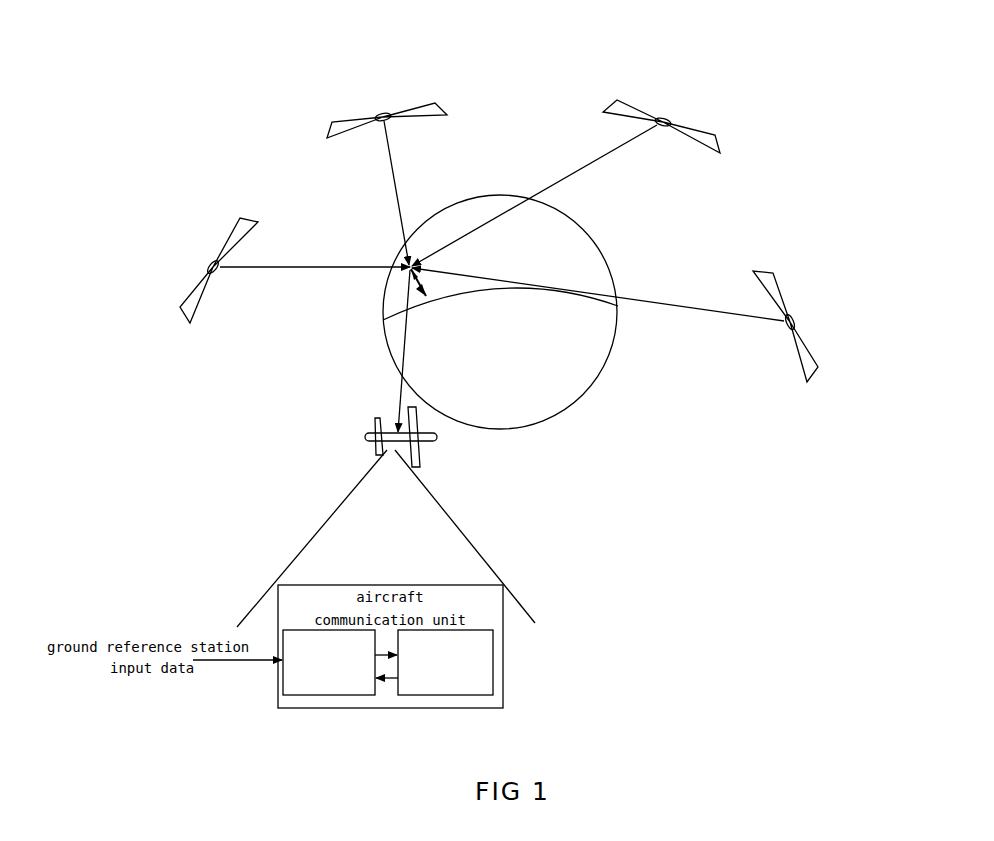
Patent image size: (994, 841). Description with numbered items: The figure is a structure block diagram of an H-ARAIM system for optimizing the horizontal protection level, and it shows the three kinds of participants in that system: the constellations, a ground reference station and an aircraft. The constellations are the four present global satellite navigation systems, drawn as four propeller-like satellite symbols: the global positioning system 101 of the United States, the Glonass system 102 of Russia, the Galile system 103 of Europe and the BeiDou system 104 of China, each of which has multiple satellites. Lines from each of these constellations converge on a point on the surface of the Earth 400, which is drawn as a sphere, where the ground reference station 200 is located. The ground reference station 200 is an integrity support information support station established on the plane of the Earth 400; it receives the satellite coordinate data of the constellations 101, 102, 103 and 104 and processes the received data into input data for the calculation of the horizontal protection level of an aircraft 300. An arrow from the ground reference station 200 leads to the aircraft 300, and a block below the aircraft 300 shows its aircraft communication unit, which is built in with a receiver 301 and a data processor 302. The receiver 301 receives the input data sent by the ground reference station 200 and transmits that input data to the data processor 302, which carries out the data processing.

The global positioning system 101 is at (203, 261).
The Glonass system 102 is at (380, 100).
The Galile system 103 is at (675, 112).
The BeiDou system 104 is at (797, 308).
The Earth 400 is at (610, 262).
The ground reference station 200 is at (430, 293).
The aircraft 300 is at (442, 450).
The receiver 301 is at (329, 662).
The data processor 302 is at (445, 662).